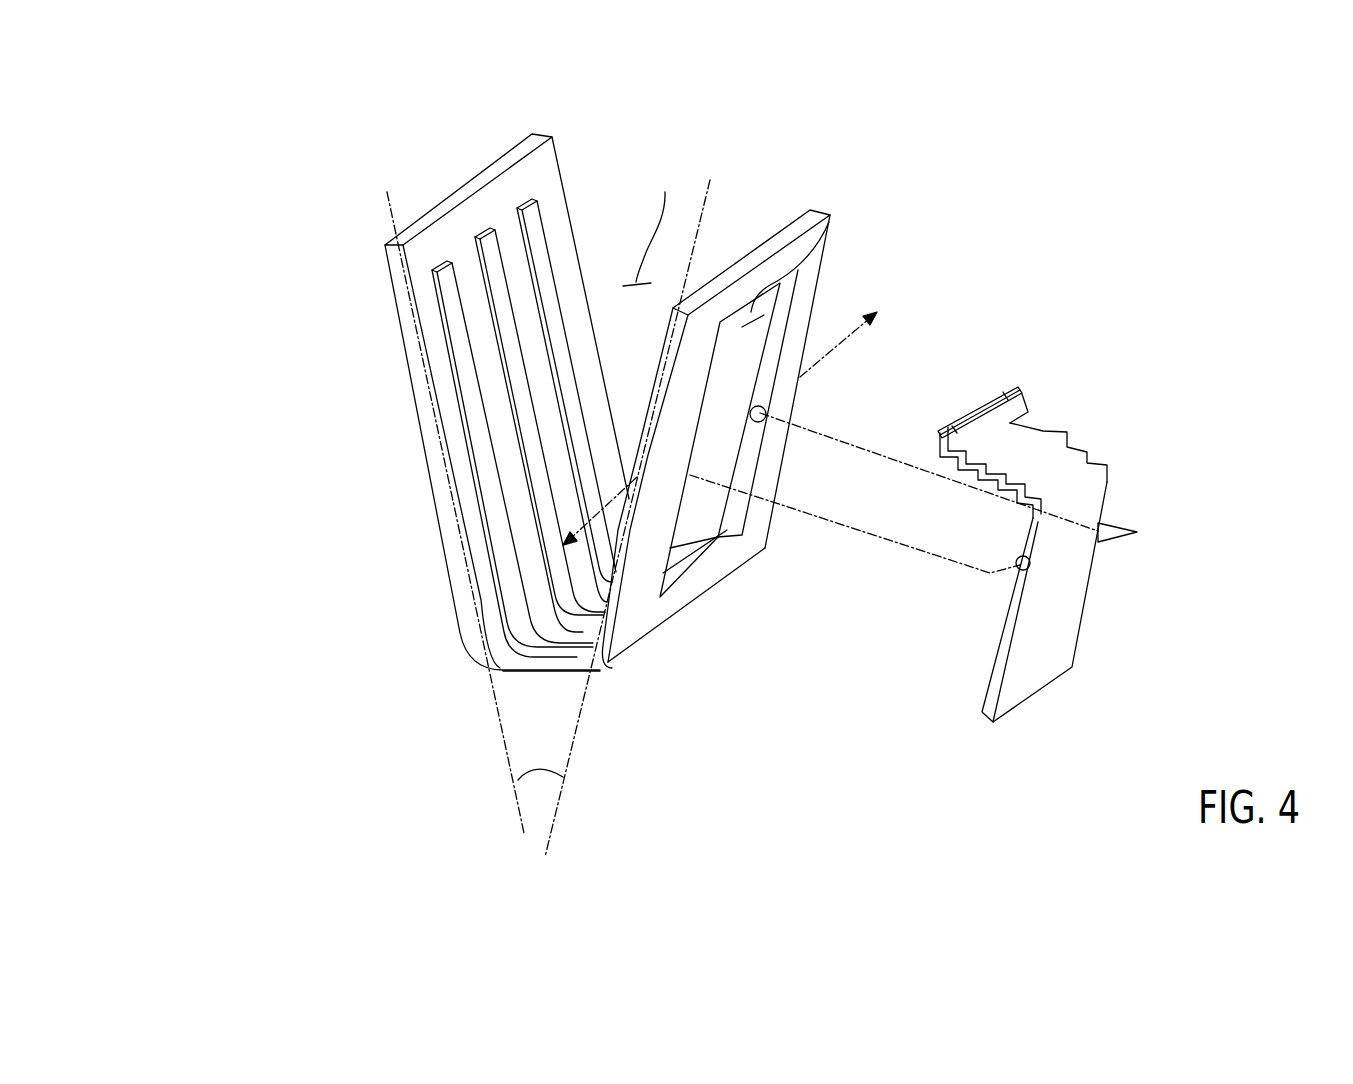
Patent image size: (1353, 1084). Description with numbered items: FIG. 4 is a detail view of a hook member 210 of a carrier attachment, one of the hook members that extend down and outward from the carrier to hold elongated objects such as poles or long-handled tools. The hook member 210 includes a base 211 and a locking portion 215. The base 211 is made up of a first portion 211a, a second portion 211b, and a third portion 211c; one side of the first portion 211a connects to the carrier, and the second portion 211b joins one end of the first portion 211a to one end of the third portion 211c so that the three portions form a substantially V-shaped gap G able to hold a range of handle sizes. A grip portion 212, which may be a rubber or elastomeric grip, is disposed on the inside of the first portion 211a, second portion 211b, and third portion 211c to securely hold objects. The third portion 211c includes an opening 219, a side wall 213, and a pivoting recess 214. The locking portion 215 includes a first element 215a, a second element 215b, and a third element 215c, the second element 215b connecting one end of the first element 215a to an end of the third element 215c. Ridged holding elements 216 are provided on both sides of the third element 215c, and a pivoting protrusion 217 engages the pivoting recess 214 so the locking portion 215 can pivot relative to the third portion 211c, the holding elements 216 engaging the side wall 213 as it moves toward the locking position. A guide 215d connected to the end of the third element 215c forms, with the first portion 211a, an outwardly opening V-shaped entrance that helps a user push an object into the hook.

The hook member 210 is at (165, 166).
The base 211 is at (348, 272).
The first portion 211a is at (455, 438).
The second portion 211b is at (550, 672).
The third portion 211c is at (616, 606).
The grip portion 212 is at (455, 320).
The side wall 213 is at (783, 307).
The pivoting recess 214 is at (770, 414).
The locking portion 215 is at (1099, 281).
The first element 215a is at (1067, 430).
The second element 215b is at (1058, 485).
The third element 215c is at (1020, 424).
The guide 215d is at (1005, 394).
The holding element 216 is at (980, 480).
The pivoting protrusion 217 is at (1032, 562).
The opening 219 is at (826, 228).
The gap G is at (726, 250).